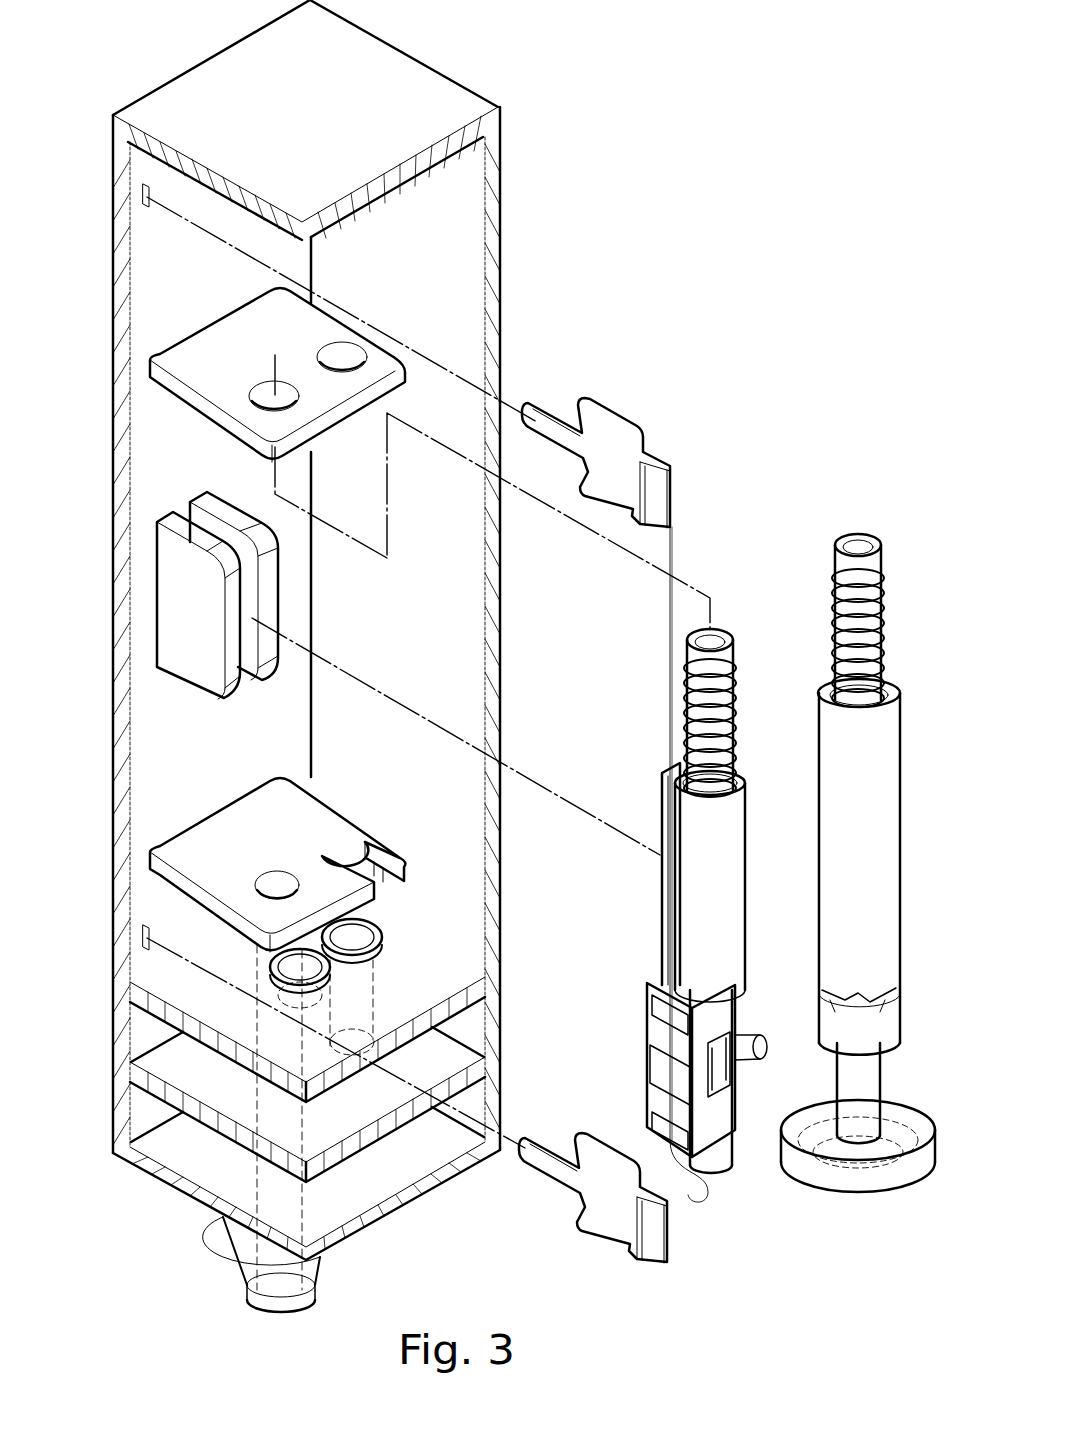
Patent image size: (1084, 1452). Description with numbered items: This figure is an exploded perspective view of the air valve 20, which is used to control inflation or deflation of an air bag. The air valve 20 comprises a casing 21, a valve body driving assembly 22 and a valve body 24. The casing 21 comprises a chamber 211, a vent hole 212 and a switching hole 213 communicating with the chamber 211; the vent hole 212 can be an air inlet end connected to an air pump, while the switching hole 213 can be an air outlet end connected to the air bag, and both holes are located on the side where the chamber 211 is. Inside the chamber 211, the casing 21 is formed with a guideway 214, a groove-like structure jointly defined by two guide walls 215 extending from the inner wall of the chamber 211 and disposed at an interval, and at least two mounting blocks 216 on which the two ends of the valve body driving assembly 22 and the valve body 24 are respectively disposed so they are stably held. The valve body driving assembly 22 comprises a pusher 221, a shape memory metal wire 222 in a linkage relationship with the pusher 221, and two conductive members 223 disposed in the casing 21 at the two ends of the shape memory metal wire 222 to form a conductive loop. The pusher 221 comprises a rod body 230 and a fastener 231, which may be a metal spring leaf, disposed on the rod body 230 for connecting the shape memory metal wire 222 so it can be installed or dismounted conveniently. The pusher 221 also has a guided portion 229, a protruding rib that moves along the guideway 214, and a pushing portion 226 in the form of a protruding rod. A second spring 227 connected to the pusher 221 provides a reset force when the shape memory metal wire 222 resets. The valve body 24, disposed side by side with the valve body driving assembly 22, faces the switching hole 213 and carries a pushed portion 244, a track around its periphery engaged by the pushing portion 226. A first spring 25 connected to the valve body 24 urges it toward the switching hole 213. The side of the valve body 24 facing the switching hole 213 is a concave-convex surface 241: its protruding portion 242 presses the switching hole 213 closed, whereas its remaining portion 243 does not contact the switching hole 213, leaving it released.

The air valve 20 is at (846, 79).
The casing 21 is at (500, 196).
The chamber 211 is at (462, 278).
The vent hole 212 is at (258, 948).
The switching hole 213 is at (288, 952).
The guideway 214 is at (262, 593).
The guide walls 215 is at (203, 490).
The mounting blocks 216 is at (355, 337).
The valve body driving assembly 22 is at (664, 768).
The pusher 221 is at (586, 905).
The shape memory metal wire 222 is at (673, 558).
The conductive members 223 is at (614, 437).
The pushing portion 226 is at (756, 1043).
The second spring 227 is at (718, 762).
The guided portion 229 is at (665, 813).
The rod body 230 is at (690, 918).
The fastener 231 is at (655, 1000).
The valve body 24 is at (822, 688).
The concave-convex surface 241 is at (857, 1303).
The protruding portion 242 is at (813, 1190).
The remaining portion 243 is at (870, 1185).
The pushed portion 244 is at (882, 1000).
The first spring 25 is at (858, 603).